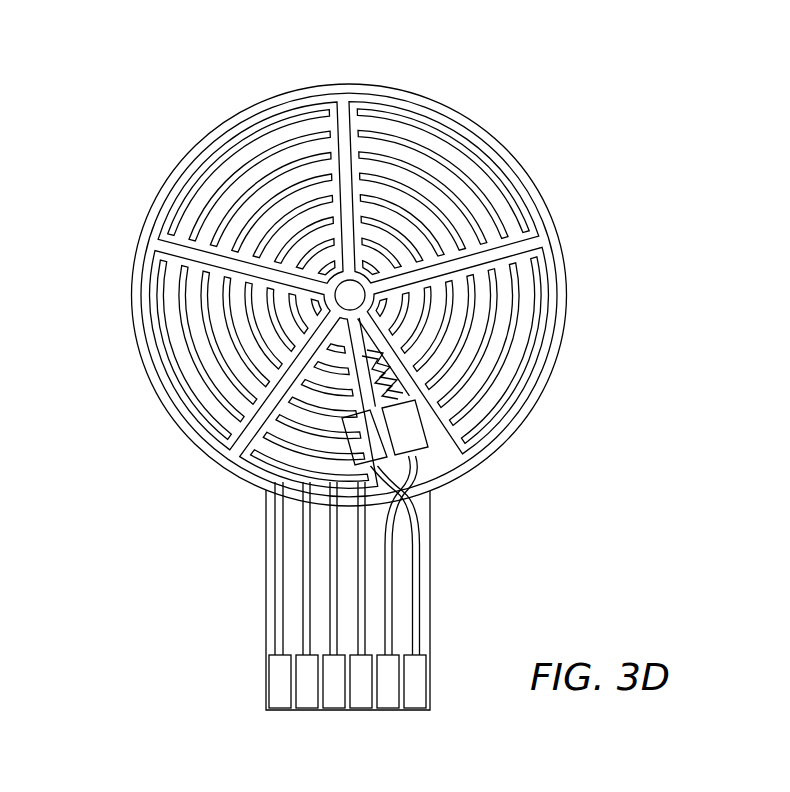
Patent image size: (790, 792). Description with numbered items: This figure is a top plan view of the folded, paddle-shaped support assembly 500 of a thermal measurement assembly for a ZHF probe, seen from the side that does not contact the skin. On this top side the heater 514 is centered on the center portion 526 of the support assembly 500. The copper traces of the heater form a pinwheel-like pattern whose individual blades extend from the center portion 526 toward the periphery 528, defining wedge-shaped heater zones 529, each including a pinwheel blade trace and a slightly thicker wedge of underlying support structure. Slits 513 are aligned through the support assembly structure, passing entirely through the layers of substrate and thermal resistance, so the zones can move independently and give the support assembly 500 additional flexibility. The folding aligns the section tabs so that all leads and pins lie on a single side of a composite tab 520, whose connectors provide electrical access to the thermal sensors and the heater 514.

The support assembly 500 is at (129, 80).
The heater 514 is at (253, 112).
The slits 513 is at (345, 100).
The center portion 526 is at (350, 290).
The heater zones 529 is at (506, 117).
The periphery 528 is at (546, 382).
The composite tab 520 is at (432, 600).